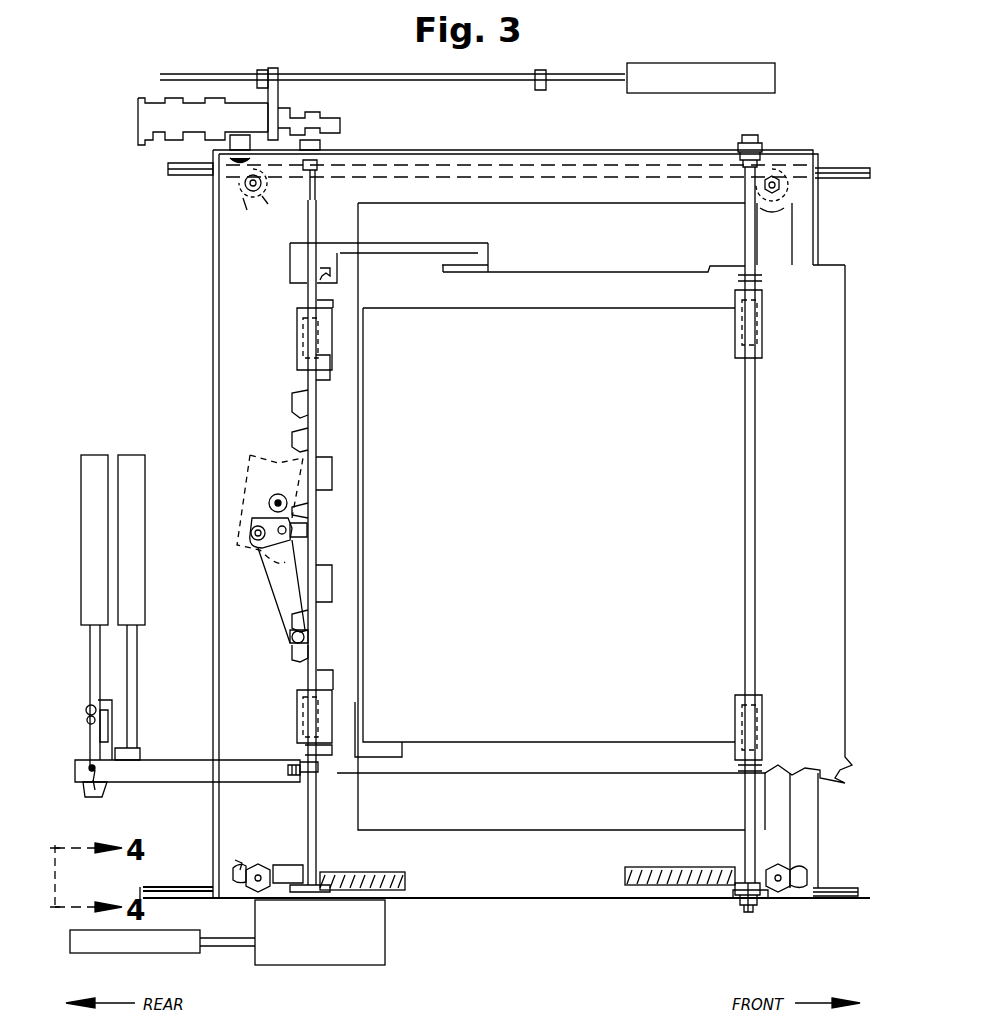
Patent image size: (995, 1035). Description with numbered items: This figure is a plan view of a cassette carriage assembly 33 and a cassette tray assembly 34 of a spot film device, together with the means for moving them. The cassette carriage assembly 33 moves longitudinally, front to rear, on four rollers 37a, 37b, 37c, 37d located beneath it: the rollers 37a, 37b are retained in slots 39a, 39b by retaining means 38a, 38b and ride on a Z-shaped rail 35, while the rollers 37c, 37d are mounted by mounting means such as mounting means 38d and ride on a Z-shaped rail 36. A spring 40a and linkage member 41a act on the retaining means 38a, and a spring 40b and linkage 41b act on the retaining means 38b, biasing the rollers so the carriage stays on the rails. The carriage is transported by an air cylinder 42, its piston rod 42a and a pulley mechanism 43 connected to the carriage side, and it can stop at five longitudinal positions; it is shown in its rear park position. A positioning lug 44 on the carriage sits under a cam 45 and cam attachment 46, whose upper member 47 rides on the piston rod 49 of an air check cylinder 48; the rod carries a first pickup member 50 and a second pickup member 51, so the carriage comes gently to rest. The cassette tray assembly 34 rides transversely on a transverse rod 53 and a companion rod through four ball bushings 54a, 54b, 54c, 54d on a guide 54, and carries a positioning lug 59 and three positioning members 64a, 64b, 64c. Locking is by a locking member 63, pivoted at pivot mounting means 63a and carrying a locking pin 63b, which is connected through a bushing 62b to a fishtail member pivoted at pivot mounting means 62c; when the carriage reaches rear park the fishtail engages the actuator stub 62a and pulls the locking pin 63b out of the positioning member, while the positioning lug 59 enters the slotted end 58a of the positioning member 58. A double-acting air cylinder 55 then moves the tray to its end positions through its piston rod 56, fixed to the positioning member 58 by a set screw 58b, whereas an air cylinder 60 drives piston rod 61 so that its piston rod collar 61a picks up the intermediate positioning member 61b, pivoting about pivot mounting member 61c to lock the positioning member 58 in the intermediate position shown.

The cassette carriage assembly 33 is at (808, 233).
The cassette tray assembly 34 is at (838, 500).
The Z-shaped rail 35 is at (858, 898).
The Z-shaped rail 36 is at (847, 168).
The roller 37a is at (270, 866).
The roller 37b is at (775, 866).
The roller 37c is at (785, 188).
The roller 37d is at (262, 192).
The retaining means 38a is at (238, 873).
The retaining means 38b is at (780, 895).
The mounting means 38d is at (246, 205).
The slot 39a is at (238, 862).
The slot 39b is at (803, 873).
The spring 40a is at (385, 874).
The spring 40b is at (666, 842).
The linkage member 41a is at (290, 870).
The linkage 41b is at (740, 897).
The air cylinder 42 is at (70, 940).
The piston rod 42a is at (225, 947).
The pulley mechanism 43 is at (385, 932).
The positioning lug 44 is at (230, 146).
The cam 45 is at (150, 145).
The cam attachment 46 is at (340, 122).
The upper member 47 is at (278, 68).
The air check cylinder 48 is at (775, 72).
The piston rod 49 is at (458, 82).
The first pickup member 50 is at (542, 88).
The second pickup member 51 is at (260, 70).
The transverse rod 53 is at (745, 478).
The guide rail 54 is at (315, 440).
The ball bushing 54a is at (318, 722).
The ball bushing 54b is at (760, 722).
The ball bushing 54c is at (740, 322).
The ball bushing 54d is at (318, 337).
The double-acting air cylinder 55 is at (93, 455).
The piston rod 56 is at (90, 655).
The positioning member 58 is at (180, 782).
The slotted end 58a is at (292, 762).
The set screw 58b is at (85, 782).
The positioning lug 59 is at (302, 778).
The air cylinder 60 is at (133, 455).
The piston rod 61 is at (137, 660).
The piston rod collar 61a is at (135, 748).
The intermediate positioning member 61b is at (90, 705).
The pivot mounting member 61c is at (87, 723).
The actuator stub 62a is at (275, 463).
The bushing 62b is at (255, 548).
The pivot mounting means 62c is at (268, 500).
The locking member 63 is at (280, 618).
The pivot mounting means 63a is at (300, 644).
The locking pin 63b is at (290, 534).
The positioning member 64a is at (300, 622).
The positioning member 64b is at (300, 510).
The positioning member 64c is at (305, 405).